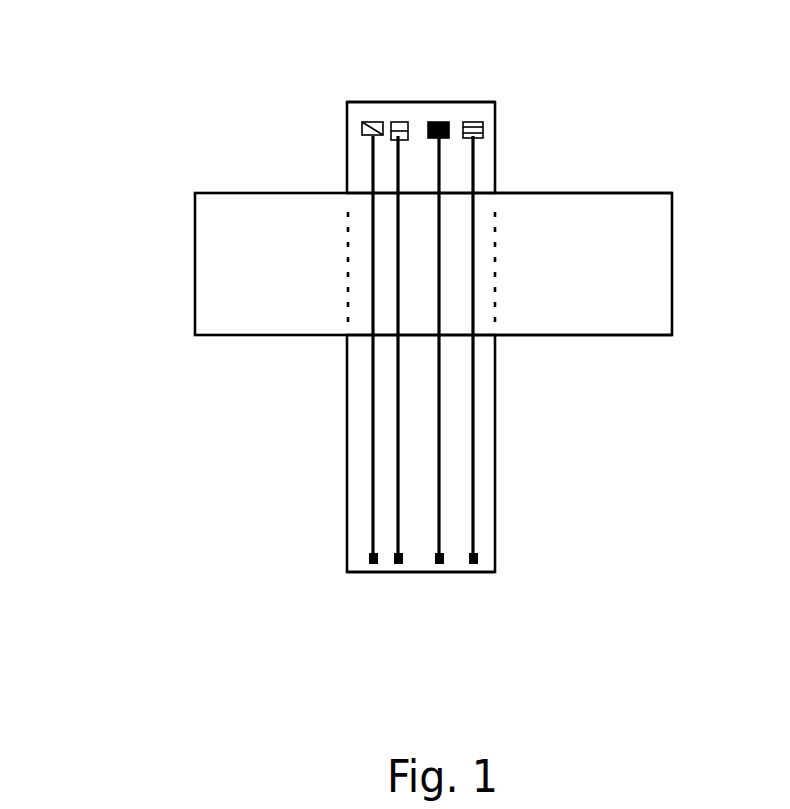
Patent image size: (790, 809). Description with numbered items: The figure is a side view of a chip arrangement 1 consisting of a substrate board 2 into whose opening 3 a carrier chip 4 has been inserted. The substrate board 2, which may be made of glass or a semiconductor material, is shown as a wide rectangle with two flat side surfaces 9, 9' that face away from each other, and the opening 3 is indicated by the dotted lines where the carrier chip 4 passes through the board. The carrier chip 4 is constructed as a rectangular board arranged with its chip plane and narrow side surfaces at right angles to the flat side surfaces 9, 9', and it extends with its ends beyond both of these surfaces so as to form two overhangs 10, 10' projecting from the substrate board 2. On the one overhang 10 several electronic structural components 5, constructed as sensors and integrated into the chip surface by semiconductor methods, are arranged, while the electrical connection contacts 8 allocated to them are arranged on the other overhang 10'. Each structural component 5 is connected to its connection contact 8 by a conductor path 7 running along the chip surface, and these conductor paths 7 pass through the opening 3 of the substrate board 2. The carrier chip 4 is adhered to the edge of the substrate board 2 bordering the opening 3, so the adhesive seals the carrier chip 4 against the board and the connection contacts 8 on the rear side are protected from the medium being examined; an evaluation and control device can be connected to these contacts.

The chip arrangement 1 is at (197, 488).
The substrate board 2 is at (258, 274).
The opening 3 is at (510, 180).
The carrier chip 4 is at (487, 485).
The electronic structural components 5 is at (472, 122).
The conductor path 7 is at (398, 402).
The connection contact 8 is at (473, 565).
The flat side surface 9 is at (591, 151).
The flat side surface 9' is at (583, 401).
The overhang 10 is at (507, 68).
The overhang 10' is at (357, 610).